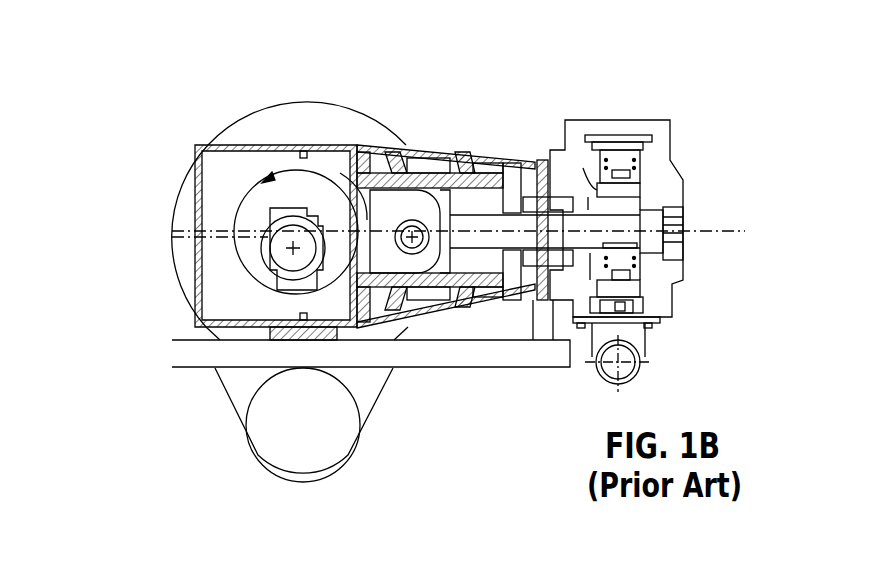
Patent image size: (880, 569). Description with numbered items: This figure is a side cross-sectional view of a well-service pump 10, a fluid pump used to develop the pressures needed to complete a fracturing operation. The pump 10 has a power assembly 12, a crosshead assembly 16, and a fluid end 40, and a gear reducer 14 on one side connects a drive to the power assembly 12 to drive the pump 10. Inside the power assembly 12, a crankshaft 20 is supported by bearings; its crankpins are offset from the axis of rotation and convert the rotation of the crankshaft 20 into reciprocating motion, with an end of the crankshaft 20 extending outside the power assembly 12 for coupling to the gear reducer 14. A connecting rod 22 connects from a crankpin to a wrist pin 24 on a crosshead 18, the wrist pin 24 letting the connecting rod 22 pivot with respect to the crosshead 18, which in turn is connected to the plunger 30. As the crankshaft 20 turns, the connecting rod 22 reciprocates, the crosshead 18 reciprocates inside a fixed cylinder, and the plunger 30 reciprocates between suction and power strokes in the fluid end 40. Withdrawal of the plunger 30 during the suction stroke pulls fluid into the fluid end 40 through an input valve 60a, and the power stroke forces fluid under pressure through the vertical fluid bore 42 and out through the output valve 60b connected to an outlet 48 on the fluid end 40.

The well-service pump 10 is at (62, 101).
The power assembly 12 is at (198, 158).
The gear reducer 14 is at (198, 146).
The crosshead assembly 16 is at (523, 160).
The crosshead 18 is at (467, 263).
The crankshaft 20 is at (295, 234).
The connecting rod 22 is at (353, 257).
The wrist pin 24 is at (412, 252).
The plunger 30 is at (481, 158).
The fluid end 40 is at (661, 120).
The fluid bore 42 is at (632, 216).
The outlet 48 is at (582, 168).
The input valve 60a is at (640, 272).
The output valve 60b is at (645, 168).